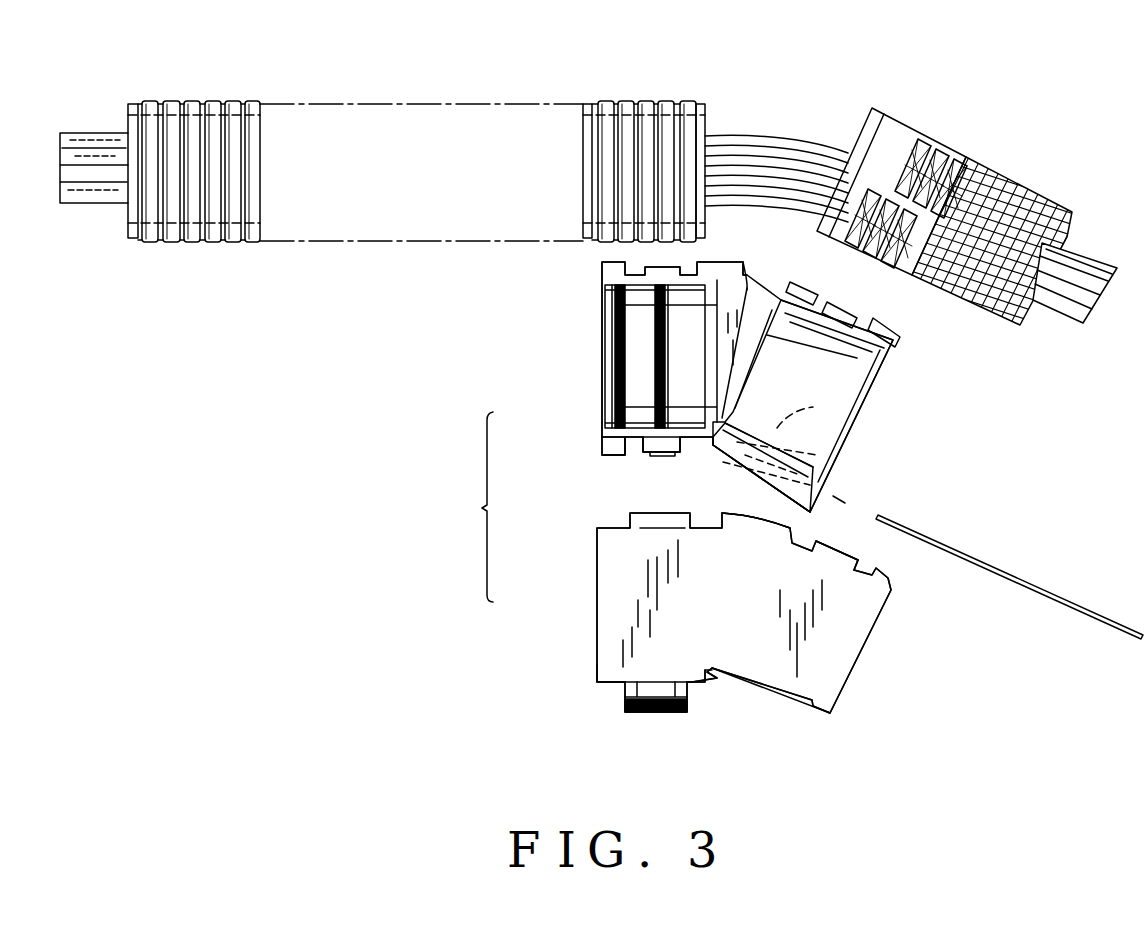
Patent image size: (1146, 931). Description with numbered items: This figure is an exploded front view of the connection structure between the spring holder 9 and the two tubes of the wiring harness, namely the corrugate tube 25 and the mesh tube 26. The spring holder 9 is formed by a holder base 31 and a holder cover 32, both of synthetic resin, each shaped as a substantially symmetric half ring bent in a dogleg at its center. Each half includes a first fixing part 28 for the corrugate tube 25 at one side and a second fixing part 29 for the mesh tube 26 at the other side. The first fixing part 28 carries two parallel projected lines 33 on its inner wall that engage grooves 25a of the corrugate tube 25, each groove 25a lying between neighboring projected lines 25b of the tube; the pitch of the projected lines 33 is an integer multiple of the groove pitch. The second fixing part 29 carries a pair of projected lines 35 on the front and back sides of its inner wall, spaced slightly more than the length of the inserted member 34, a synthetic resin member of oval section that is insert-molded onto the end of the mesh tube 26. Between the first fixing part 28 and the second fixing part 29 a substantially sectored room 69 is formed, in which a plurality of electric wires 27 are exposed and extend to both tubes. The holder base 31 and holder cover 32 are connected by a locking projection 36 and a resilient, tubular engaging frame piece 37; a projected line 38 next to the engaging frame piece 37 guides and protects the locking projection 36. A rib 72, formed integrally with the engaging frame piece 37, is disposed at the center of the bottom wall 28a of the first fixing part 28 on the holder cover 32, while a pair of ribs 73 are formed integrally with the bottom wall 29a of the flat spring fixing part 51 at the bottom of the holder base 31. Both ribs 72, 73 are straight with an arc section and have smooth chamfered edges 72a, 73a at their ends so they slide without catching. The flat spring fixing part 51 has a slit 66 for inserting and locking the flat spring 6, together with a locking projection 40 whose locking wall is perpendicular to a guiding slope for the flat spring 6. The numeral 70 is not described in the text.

The flat spring 6 is at (1017, 573).
The spring holder 9 is at (471, 507).
The corrugate tube 25 is at (628, 104).
The grooves 25a is at (658, 104).
The projected lines 25b is at (668, 104).
The mesh tube 26 is at (1038, 187).
The electric wires 27 is at (790, 150).
The first fixing part 28 is at (617, 304).
The bottom wall of the first fixing part 28a is at (610, 687).
The second fixing part 29 is at (850, 343).
The bottom wall of the second fixing part 29a is at (880, 560).
The holder base 31 is at (588, 408).
The holder cover 32 is at (588, 585).
The projected lines 33 is at (622, 380).
The inserted member 34 is at (885, 115).
The projected lines 35 is at (835, 350).
The locking projection 36 is at (622, 473).
The engaging frame piece 37 is at (647, 693).
The projected line 38 is at (607, 457).
The locking projection 40 is at (813, 407).
The flat spring fixing part 51 is at (830, 488).
The slit 66 is at (853, 448).
The sectored room 69 is at (743, 262).
The inclined wall 70 is at (773, 697).
The rib 72 is at (652, 713).
The chamfered edges 72a is at (683, 713).
The rib 73 is at (727, 470).
The chamfered edges 73a is at (833, 496).